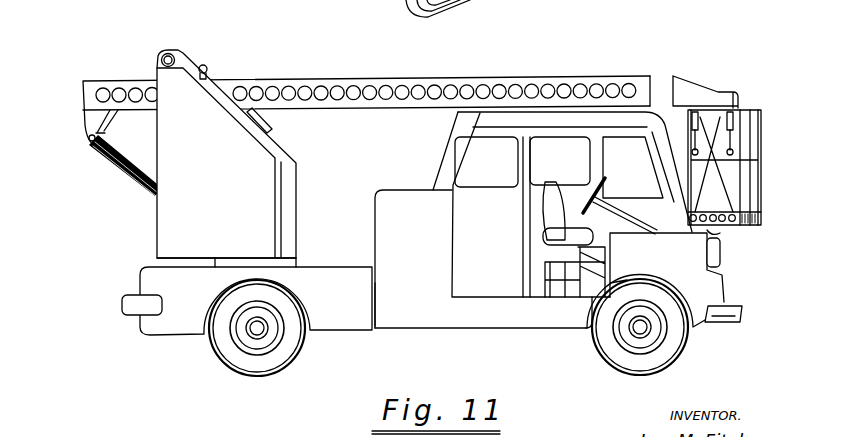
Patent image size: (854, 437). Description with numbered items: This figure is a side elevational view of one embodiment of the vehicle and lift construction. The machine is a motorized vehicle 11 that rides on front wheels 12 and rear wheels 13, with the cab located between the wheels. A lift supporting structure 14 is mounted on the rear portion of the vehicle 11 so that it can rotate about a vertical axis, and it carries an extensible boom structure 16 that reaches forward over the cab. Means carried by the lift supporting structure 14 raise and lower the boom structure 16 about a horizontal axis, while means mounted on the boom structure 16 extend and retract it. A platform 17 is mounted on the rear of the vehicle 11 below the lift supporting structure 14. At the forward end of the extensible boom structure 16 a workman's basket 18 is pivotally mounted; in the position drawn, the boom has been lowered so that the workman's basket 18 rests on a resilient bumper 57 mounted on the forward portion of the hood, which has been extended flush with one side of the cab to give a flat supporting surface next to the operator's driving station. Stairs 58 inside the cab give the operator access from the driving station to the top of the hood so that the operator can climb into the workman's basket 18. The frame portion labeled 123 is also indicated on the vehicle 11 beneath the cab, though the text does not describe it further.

The motorized vehicle 11 is at (742, 292).
The front wheels 12 is at (604, 345).
The rear wheels 13 is at (290, 350).
The lift supporting structure 14 is at (170, 238).
The extensible boom structure 16 is at (420, 76).
The platform 17 is at (180, 322).
The workman's basket 18 is at (753, 106).
The resilient bumper 57 is at (722, 246).
The stairs 58 is at (545, 268).
The chassis frame 123 is at (467, 334).